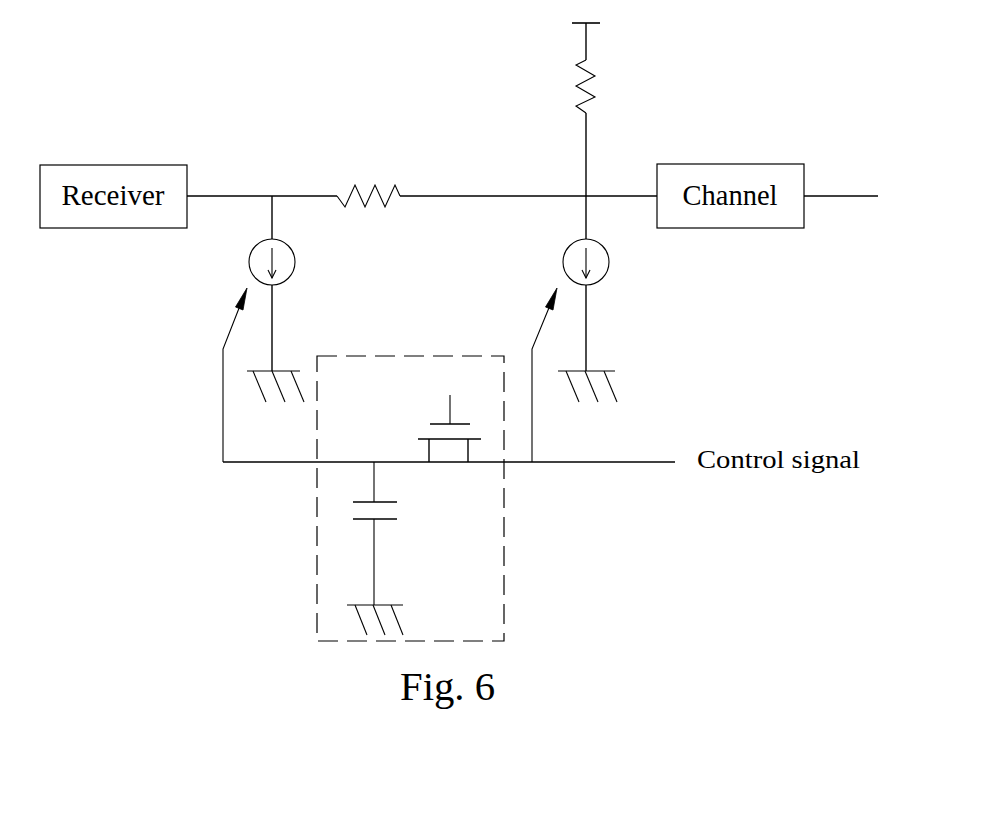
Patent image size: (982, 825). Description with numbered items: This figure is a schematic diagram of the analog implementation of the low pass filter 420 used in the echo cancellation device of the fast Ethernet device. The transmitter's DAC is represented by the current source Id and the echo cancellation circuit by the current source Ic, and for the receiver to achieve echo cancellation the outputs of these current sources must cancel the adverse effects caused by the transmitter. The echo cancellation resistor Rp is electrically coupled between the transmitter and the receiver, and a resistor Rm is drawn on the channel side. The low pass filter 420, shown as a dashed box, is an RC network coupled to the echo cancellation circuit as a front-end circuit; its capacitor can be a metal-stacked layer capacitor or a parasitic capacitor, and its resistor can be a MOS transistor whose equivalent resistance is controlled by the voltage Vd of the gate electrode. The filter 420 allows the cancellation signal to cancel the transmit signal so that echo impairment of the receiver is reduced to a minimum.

The low pass filter 420 is at (453, 498).
The echo cancellation resistor Rp is at (387, 202).
The matching resistor Rm is at (592, 80).
The current source Ic is at (288, 299).
The current source Id is at (602, 257).
The Vd of the gate electrode Vd is at (449, 412).